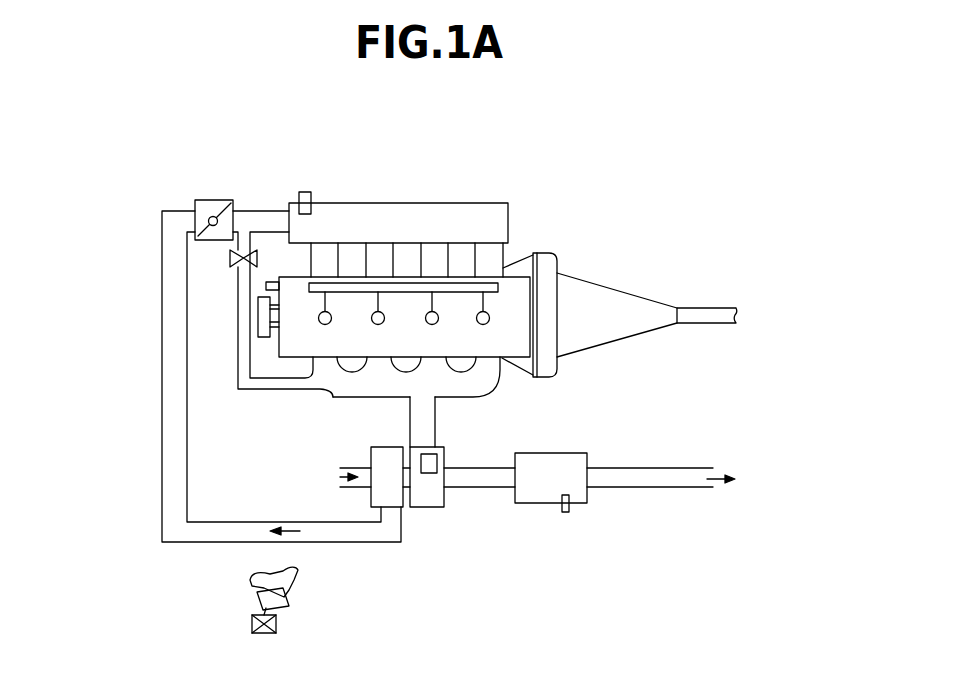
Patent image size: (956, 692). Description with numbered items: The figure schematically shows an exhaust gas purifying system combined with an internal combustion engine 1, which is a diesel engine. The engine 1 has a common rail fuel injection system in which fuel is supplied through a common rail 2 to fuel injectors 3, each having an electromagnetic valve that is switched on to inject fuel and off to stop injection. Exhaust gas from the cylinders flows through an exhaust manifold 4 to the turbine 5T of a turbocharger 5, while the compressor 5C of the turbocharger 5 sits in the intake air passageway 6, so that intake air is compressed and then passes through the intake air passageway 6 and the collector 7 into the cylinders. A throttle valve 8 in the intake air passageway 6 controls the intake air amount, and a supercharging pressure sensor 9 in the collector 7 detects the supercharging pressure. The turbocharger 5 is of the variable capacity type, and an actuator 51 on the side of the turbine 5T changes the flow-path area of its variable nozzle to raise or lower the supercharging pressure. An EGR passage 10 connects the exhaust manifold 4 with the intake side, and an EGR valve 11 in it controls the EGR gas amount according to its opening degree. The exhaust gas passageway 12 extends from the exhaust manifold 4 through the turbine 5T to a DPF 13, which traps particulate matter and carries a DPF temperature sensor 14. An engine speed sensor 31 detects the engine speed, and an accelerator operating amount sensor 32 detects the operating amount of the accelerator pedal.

The internal combustion engine 1 is at (505, 342).
The common rail 2 is at (453, 290).
The fuel injector 3 is at (490, 316).
The exhaust manifold 4 is at (337, 398).
The turbocharger 5 is at (415, 511).
The compressor 5C is at (390, 447).
The turbine 5T is at (435, 508).
The actuator 51 is at (445, 458).
The intake air passageway 6 is at (162, 438).
The collector 7 is at (412, 210).
The throttle valve 8 is at (196, 203).
The supercharging pressure sensor 9 is at (311, 197).
The EGR passage 10 is at (253, 390).
The EGR valve 11 is at (230, 258).
The exhaust gas passageway 12 is at (487, 488).
The DPF 13 is at (528, 498).
The DPF temperature sensor 14 is at (565, 512).
The engine speed sensor 31 is at (270, 282).
The accelerator operating amount sensor 32 is at (252, 620).